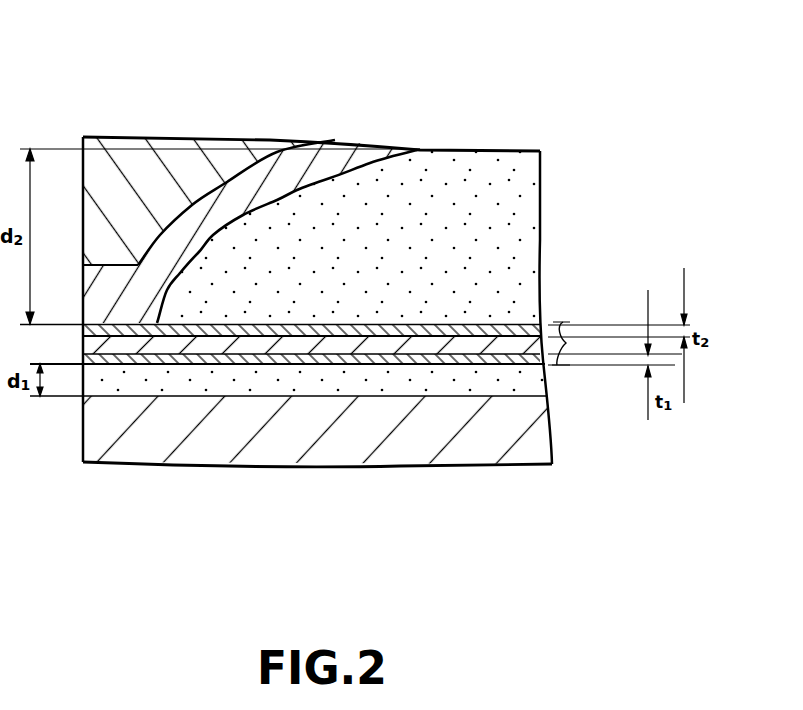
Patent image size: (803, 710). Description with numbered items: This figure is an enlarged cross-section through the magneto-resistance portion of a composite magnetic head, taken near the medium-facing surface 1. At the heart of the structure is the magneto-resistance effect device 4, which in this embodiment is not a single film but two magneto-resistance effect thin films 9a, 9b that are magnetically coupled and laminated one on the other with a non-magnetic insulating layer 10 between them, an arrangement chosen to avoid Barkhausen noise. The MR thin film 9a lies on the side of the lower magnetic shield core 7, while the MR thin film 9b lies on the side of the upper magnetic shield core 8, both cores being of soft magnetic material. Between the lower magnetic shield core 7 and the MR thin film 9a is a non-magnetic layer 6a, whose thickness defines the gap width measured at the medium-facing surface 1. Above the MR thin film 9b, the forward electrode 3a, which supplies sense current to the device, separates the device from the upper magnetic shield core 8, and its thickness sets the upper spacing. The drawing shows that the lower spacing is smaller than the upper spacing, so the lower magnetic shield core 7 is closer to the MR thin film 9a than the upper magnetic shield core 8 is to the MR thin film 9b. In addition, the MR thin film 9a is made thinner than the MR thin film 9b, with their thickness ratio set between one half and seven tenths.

The medium-facing surface 1 is at (83, 181).
The upper magnetic shield core 8 is at (147, 160).
The forward electrode 3a is at (387, 147).
The MR thin film 9b is at (530, 326).
The magneto-resistance effect device 4 is at (570, 343).
The MR thin film 9a is at (524, 364).
The non-magnetic insulating layer 10 is at (405, 345).
The non-magnetic layer 6a is at (250, 383).
The lower magnetic shield core 7 is at (508, 440).